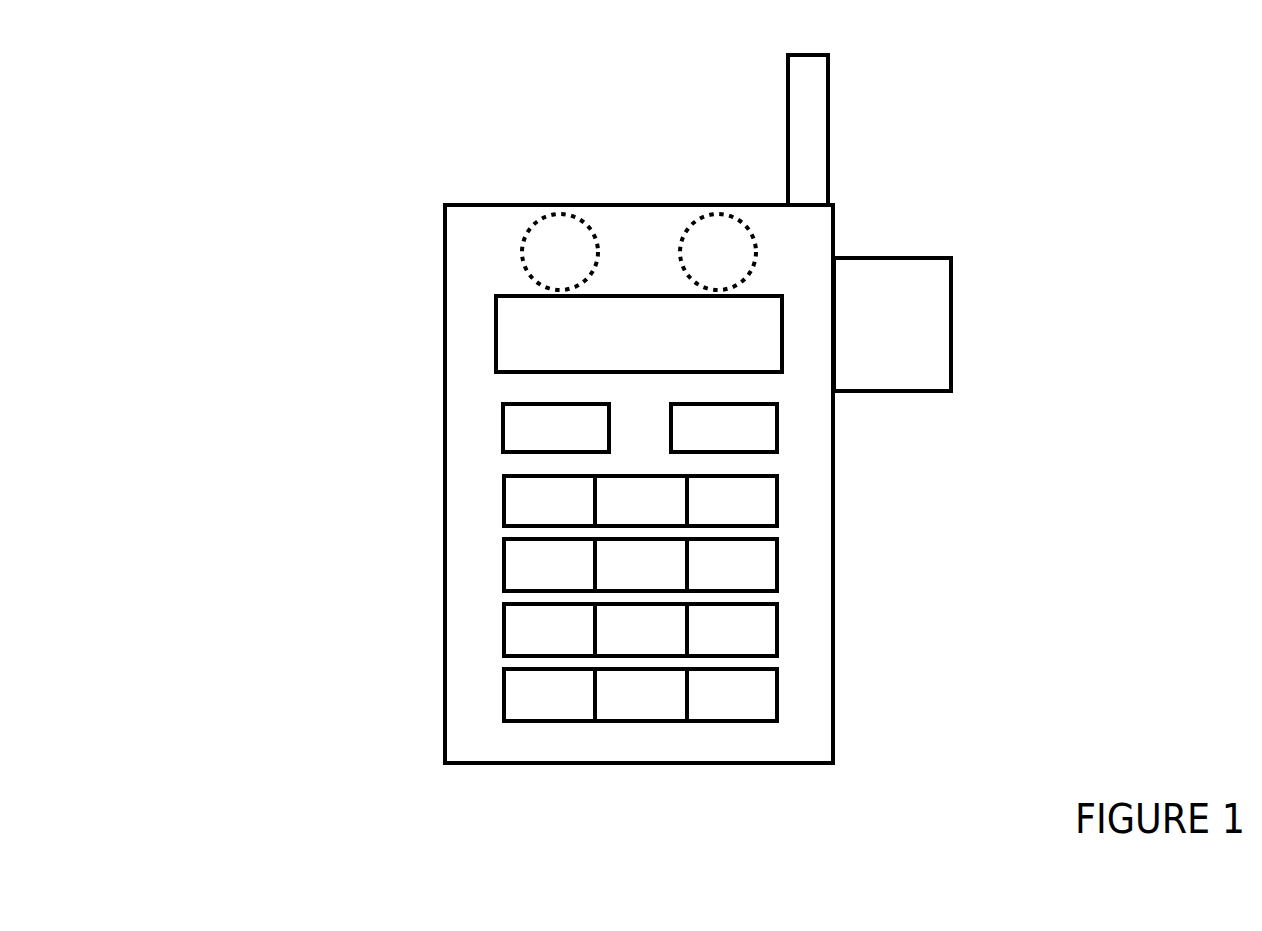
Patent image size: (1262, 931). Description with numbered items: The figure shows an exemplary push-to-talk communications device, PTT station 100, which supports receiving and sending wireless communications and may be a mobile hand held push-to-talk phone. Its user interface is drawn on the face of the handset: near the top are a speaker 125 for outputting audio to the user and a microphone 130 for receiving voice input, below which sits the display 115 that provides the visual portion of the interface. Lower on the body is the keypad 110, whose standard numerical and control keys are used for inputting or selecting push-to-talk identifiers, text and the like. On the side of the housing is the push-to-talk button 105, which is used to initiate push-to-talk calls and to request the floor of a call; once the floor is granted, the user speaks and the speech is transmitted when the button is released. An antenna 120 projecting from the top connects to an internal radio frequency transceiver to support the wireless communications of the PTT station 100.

The PTT station 100 is at (306, 229).
The push-to-talk button 105 is at (952, 323).
The keypad 110 is at (501, 566).
The display 115 is at (495, 332).
The antenna 120 is at (830, 108).
The speaker 125 is at (567, 228).
The microphone 130 is at (729, 228).